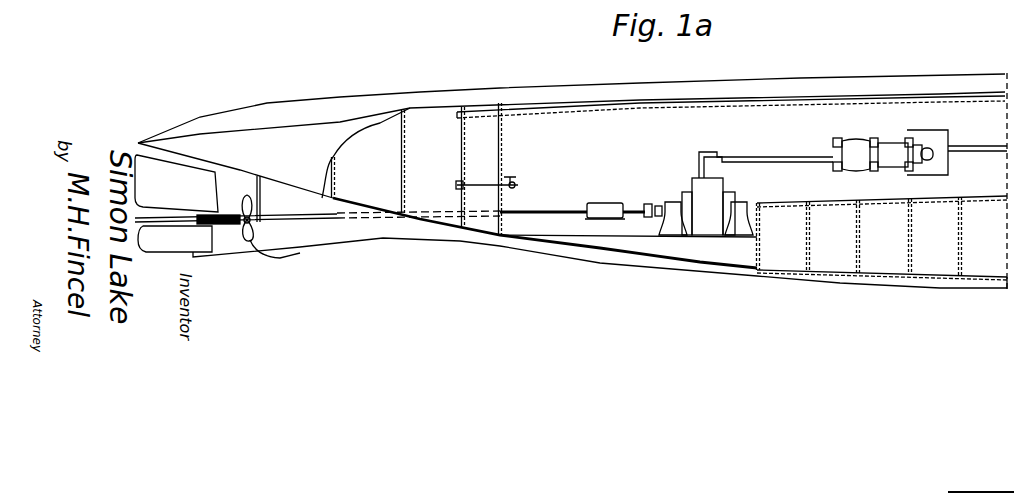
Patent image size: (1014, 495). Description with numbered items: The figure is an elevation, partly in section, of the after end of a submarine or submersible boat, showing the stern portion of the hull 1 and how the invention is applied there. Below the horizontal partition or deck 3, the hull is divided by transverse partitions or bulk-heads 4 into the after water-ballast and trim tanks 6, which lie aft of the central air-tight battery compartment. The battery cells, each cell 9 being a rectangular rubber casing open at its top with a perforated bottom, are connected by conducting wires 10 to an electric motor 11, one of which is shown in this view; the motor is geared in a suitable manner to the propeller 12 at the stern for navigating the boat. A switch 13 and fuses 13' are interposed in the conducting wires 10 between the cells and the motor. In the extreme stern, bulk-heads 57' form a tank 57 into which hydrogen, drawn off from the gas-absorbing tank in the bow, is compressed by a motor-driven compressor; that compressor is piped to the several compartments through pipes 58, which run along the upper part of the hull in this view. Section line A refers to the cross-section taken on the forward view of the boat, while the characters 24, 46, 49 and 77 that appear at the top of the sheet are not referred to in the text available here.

The hull 1 is at (693, 263).
The horizontal partition or deck 3 is at (806, 203).
The transverse partitions or bulk-heads 4 is at (51, 0).
The after water-ballast and trim tanks 6 is at (882, 251).
The conducting wires 10 is at (762, 157).
The electric motor 11 is at (698, 190).
The propeller 12 is at (254, 257).
The switch 13 is at (909, 144).
The fuses 13' is at (852, 142).
The tank 57 is at (381, 153).
The bulk-heads 57' is at (417, 169).
The pipes 58 is at (555, 117).
The cell 9 is at (120, 0).
The element 24 is at (289, 24).
The element 46 is at (333, 9).
The element 49 is at (280, 0).
The element 77 is at (200, 0).
The line A— A is at (224, 21).